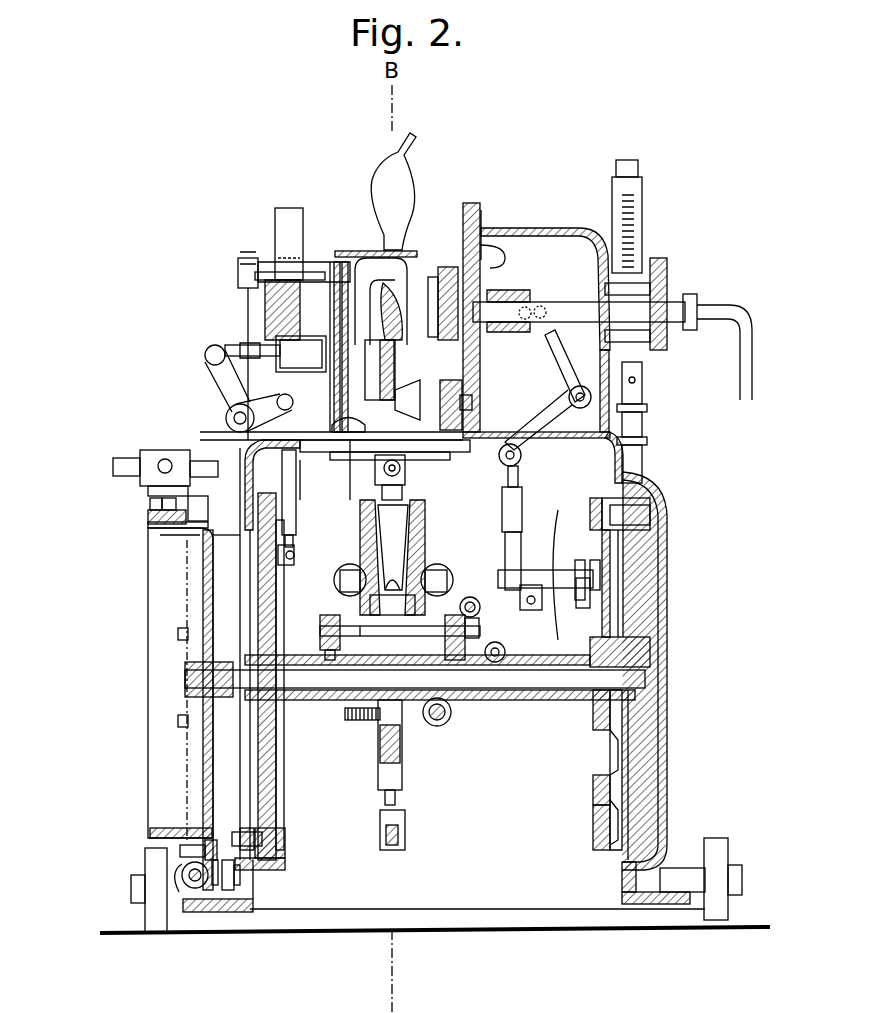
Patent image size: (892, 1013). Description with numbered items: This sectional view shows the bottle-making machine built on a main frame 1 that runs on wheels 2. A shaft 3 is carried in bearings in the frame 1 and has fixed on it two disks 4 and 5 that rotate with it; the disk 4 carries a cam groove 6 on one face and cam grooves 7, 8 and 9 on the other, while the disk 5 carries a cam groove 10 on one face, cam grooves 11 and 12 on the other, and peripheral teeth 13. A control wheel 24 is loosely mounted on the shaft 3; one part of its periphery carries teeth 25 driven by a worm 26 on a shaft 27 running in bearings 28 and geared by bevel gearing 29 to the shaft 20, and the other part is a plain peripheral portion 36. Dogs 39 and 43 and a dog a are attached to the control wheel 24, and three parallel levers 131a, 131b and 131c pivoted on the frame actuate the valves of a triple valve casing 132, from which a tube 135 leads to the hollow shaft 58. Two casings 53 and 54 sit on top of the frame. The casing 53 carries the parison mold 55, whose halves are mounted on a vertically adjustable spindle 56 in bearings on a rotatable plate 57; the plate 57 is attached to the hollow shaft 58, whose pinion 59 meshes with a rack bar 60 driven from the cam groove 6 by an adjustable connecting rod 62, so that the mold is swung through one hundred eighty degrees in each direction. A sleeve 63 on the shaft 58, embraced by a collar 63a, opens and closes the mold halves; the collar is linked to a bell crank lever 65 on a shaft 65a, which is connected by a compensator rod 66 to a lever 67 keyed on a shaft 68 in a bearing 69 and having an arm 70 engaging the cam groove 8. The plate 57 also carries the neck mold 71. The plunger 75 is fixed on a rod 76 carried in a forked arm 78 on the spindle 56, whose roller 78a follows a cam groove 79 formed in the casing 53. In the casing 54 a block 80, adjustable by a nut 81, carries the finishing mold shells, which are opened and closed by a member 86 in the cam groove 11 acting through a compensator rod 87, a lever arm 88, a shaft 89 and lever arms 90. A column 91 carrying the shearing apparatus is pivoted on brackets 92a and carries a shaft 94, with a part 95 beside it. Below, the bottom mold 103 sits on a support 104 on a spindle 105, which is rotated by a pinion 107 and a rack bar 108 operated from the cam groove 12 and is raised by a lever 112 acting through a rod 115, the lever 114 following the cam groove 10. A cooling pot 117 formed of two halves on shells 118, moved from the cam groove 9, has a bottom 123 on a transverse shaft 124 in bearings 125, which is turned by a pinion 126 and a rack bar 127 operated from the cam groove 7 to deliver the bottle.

The main frame 1 is at (604, 442).
The wheels 2 is at (436, 885).
The shaft 3 is at (415, 677).
The disk 4 is at (600, 648).
The disk 5 is at (268, 725).
The cam groove 6 is at (615, 760).
The cam groove 7 is at (596, 838).
The cam groove 8 is at (596, 790).
The cam groove 9 is at (596, 718).
The cam groove 10 is at (262, 546).
The cam groove 11 is at (278, 780).
The cam groove 12 is at (278, 845).
The teeth 13 is at (268, 870).
The shaft 20 is at (227, 894).
The control wheel 24 is at (190, 542).
The teeth 25 is at (190, 497).
The worm 26 is at (195, 888).
The shaft 27 is at (189, 887).
The bearings 28 is at (209, 892).
The bevel gearing 29 is at (218, 850).
The peripheral portion 36 is at (205, 497).
The dog 39 is at (160, 528).
The dog 43 is at (182, 636).
The casing 53 is at (532, 230).
The casing 54 is at (326, 366).
The parison mold 55 is at (415, 280).
The spindle 56 is at (470, 295).
The plate 57 is at (455, 255).
The hollow shaft 58 is at (552, 314).
The pinion 59 is at (660, 290).
The rack bar 60 is at (632, 240).
The connecting rod 62 is at (644, 410).
The sleeve 63 is at (500, 334).
The collar 63a is at (525, 300).
The bell crank lever 65 is at (562, 368).
The shaft 65a is at (568, 400).
The compensator rod 66 is at (520, 496).
The lever 67 is at (532, 608).
The shaft 68 is at (540, 575).
The bearing 69 is at (500, 568).
The arm 70 is at (606, 595).
The neck mold 71 is at (385, 385).
The plunger 75 is at (405, 311).
The rod 76 is at (408, 402).
The forked arm 78 is at (450, 430).
The rearward extension or roller 78a is at (470, 400).
The cam groove 79 is at (478, 214).
The block 80 is at (301, 354).
The nut 81 is at (258, 350).
The member 86 is at (294, 560).
The compensator rod 87 is at (296, 500).
The lever arm 88 is at (272, 485).
The shaft 89 is at (240, 420).
The lever arms 90 is at (222, 380).
The column 91 is at (286, 222).
The brackets 92a is at (268, 312).
The shaft 94 is at (290, 276).
The bracket 95 is at (252, 262).
The bottom mold 103 is at (348, 432).
The common support 104 is at (425, 452).
The spindle 105 is at (398, 488).
The pinion 107 is at (352, 718).
The rack bar 108 is at (450, 715).
The lever 112 is at (392, 850).
The lever 114 is at (255, 840).
The rod 115 is at (396, 806).
The cooling pot 117 is at (418, 535).
The shell 118 is at (420, 547).
The bottom 123 is at (395, 598).
The transverse shaft 124 is at (360, 636).
The bearings 125 is at (396, 625).
The pinion 126 is at (478, 640).
The rack bar 127 is at (478, 612).
The lever 131a is at (150, 505).
The lever 131b is at (162, 509).
The lever 131c is at (150, 519).
The triple valve casing 132 is at (145, 460).
The tube 135 is at (735, 320).
The dog a is at (180, 535).